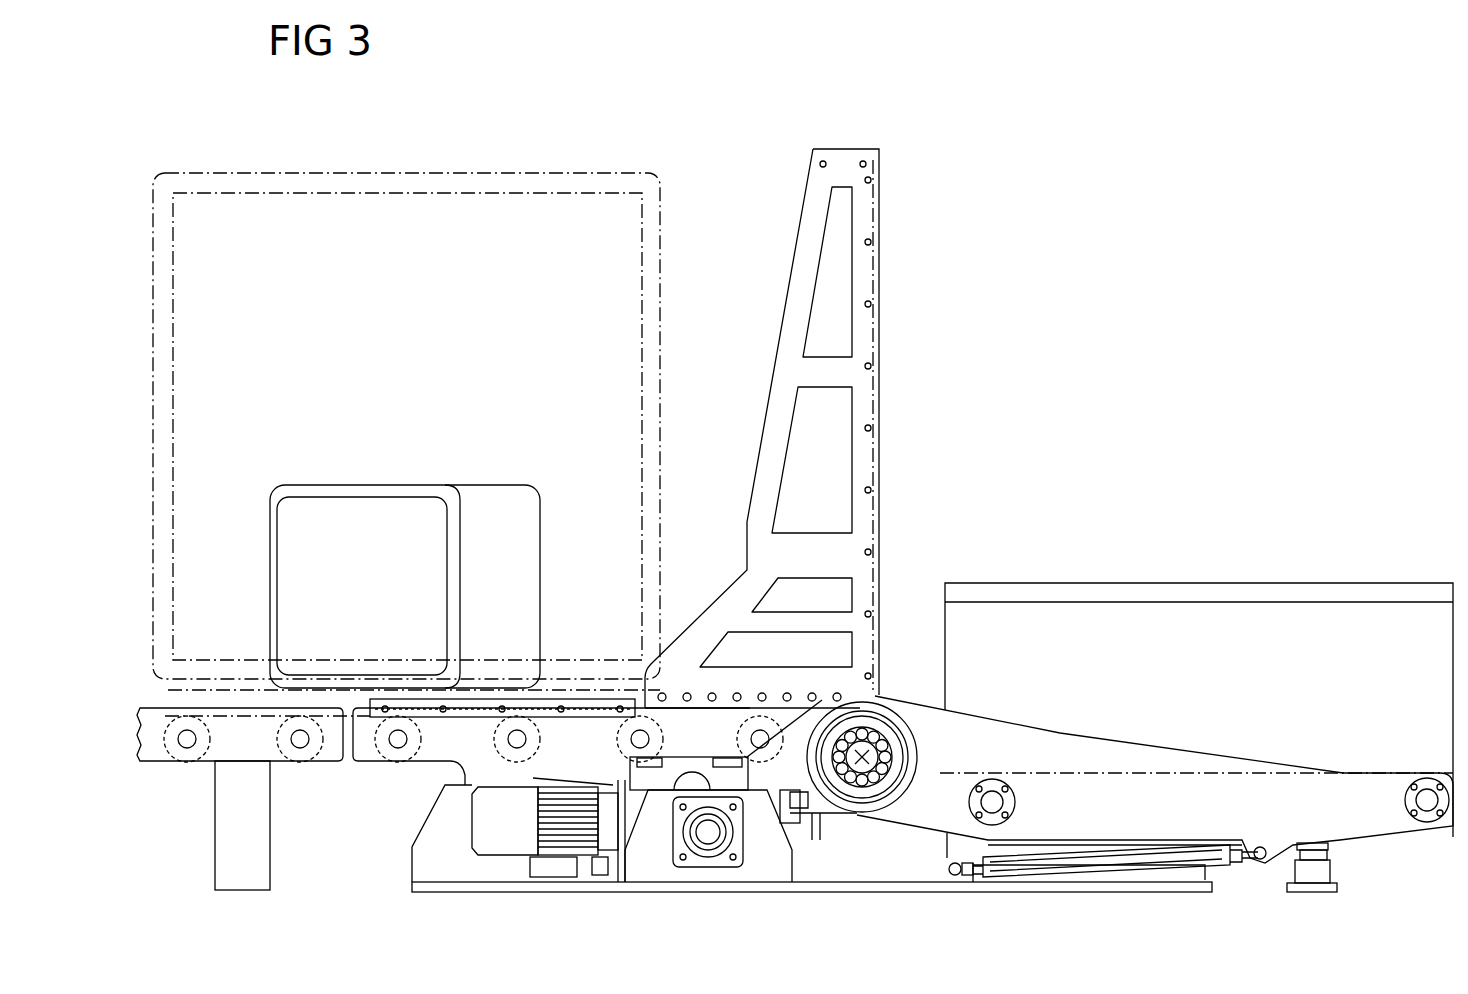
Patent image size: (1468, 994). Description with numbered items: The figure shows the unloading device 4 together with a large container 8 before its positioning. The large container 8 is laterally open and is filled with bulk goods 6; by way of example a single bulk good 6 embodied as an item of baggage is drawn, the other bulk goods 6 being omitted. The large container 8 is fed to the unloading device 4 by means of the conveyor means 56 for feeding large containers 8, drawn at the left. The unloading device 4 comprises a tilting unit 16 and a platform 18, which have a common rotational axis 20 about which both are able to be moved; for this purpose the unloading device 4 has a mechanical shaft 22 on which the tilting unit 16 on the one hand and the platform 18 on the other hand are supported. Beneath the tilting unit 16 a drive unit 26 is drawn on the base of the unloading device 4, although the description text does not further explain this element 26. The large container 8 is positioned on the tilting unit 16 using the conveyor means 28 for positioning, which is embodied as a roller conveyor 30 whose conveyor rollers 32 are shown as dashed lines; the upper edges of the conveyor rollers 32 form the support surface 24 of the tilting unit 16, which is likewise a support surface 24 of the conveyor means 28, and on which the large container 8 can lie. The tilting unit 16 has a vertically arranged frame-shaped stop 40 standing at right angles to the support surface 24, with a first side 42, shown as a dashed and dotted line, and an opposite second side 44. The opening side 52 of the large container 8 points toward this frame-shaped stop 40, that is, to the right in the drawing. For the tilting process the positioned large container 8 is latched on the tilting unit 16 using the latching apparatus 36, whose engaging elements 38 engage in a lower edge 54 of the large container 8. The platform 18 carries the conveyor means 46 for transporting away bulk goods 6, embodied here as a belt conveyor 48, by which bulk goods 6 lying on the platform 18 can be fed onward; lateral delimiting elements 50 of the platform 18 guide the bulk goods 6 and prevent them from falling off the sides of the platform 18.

The unloading device 4 is at (1266, 192).
The bulk good 6 is at (370, 486).
The large container 8 is at (256, 172).
The tilting unit 16 is at (804, 420).
The platform 18 is at (1130, 798).
The rotational axis 20 is at (858, 776).
The mechanical shaft 22 is at (868, 776).
The support surface 24 is at (300, 716).
The drive motor 26 is at (562, 836).
The conveyor means for positioning 28 is at (378, 771).
The roller conveyor 30 is at (440, 799).
The conveyor rollers 32 is at (290, 741).
The latching apparatus 36 is at (502, 653).
The engaging elements 38 is at (608, 705).
The frame-shaped stop 40 is at (843, 156).
The first side 42 is at (873, 213).
The second side 44 is at (882, 228).
The conveyor means for transporting away bulk goods 46 is at (1195, 776).
The belt conveyor 48 is at (1369, 767).
The lateral delimiting elements 50 is at (1272, 615).
The opening side 52 is at (662, 238).
The lower edge 54 is at (172, 700).
The conveyor means for feeding large containers 56 is at (186, 771).